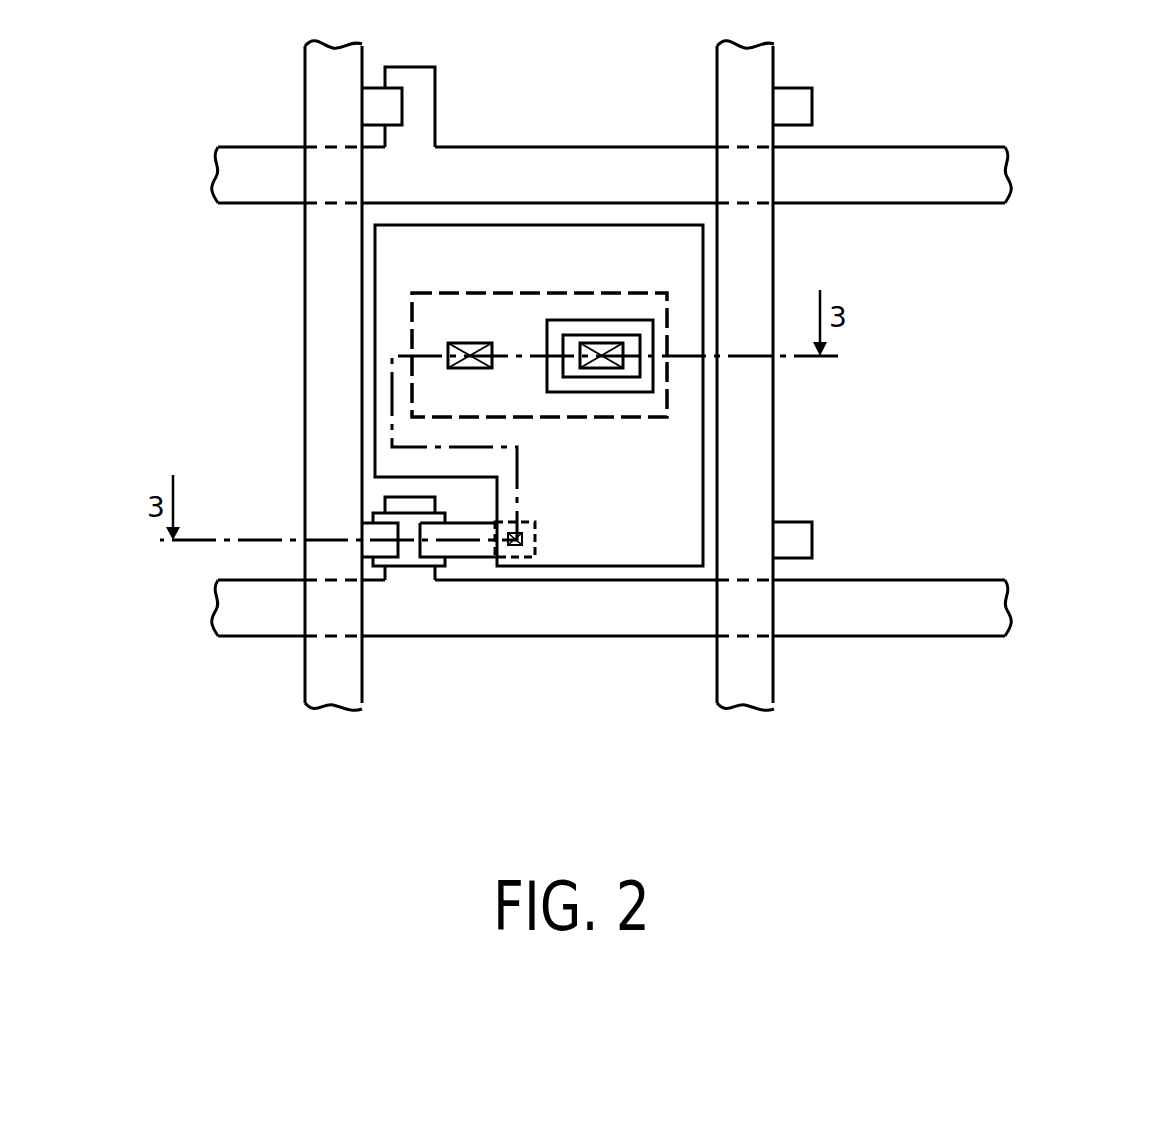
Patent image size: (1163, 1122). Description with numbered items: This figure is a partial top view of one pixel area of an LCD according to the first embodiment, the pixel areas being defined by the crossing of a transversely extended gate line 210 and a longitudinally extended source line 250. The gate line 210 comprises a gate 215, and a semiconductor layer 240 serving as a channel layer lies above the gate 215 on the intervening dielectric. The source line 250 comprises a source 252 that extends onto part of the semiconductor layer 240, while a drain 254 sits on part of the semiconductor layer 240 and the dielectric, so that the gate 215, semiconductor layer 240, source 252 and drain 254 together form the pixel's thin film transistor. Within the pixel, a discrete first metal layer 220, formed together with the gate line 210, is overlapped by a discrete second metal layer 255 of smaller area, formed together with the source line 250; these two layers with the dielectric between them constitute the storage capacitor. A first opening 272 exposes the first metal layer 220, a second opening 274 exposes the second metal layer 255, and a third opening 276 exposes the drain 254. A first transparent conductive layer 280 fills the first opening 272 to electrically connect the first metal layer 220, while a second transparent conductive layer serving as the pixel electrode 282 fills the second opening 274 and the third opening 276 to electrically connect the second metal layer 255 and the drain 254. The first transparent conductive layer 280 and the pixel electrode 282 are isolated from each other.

The gate line 210 is at (1006, 170).
The gate 215 is at (393, 500).
The first metal layer 220 is at (668, 300).
The semiconductor layer 240 is at (370, 517).
The source line 250 is at (335, 700).
The source 252 is at (388, 560).
The drain 254 is at (462, 552).
The second metal layer 255 is at (726, 342).
The first opening 272 is at (623, 370).
The second opening 274 is at (468, 343).
The third opening 276 is at (515, 548).
The first transparent conductive layer 280 is at (615, 343).
The pixel electrode 282 is at (534, 223).